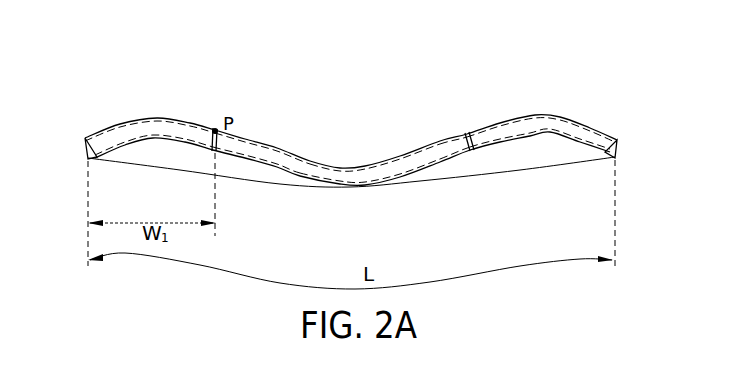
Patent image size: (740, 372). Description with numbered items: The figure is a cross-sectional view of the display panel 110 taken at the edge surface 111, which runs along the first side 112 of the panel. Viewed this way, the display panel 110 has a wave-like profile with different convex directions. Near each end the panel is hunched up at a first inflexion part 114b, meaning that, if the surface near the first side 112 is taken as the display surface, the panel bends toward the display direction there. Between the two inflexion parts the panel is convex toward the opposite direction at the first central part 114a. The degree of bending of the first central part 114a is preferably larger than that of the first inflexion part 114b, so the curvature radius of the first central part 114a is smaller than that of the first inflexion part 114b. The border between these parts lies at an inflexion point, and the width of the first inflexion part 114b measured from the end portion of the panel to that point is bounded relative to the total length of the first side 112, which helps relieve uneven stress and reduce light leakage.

The display panel 110 is at (91, 44).
The edge surface 111 is at (592, 135).
The first side 112 is at (341, 129).
The first central part 114a is at (343, 167).
The first inflexion part 114b is at (168, 115).